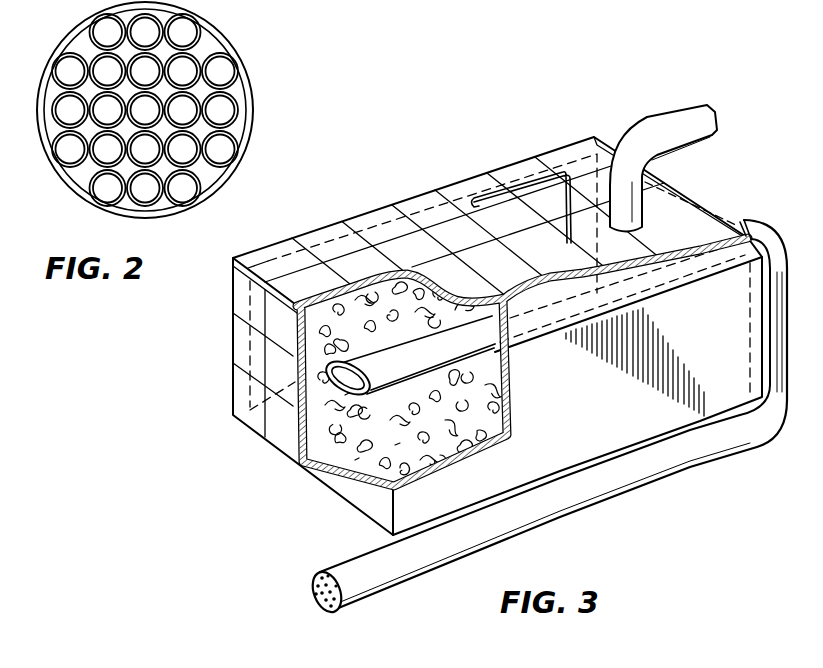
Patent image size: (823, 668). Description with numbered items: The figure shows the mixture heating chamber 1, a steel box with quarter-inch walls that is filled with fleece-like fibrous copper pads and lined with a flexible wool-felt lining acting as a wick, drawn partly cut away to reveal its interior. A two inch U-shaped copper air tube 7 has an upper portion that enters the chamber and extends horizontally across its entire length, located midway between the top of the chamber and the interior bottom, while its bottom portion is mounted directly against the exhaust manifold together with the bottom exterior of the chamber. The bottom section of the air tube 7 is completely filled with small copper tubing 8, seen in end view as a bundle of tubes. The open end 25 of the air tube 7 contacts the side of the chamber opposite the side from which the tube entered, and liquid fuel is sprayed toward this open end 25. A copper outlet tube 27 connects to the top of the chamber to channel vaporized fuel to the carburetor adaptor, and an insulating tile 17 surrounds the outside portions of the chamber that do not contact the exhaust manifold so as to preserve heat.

In FIG. 3, the mixture heating chamber 1 is at (369, 501).
In FIG. 2, the copper air tube 7 is at (252, 90).
In FIG. 3, the copper air tube 7 is at (645, 465).
In FIG. 2, the copper tubing 8 is at (185, 31).
In FIG. 3, the copper tubing 8 is at (313, 602).
In FIG. 3, the insulating tile 17 is at (741, 228).
In FIG. 3, the open end 25 is at (350, 383).
In FIG. 3, the copper outlet tube 27 is at (658, 125).